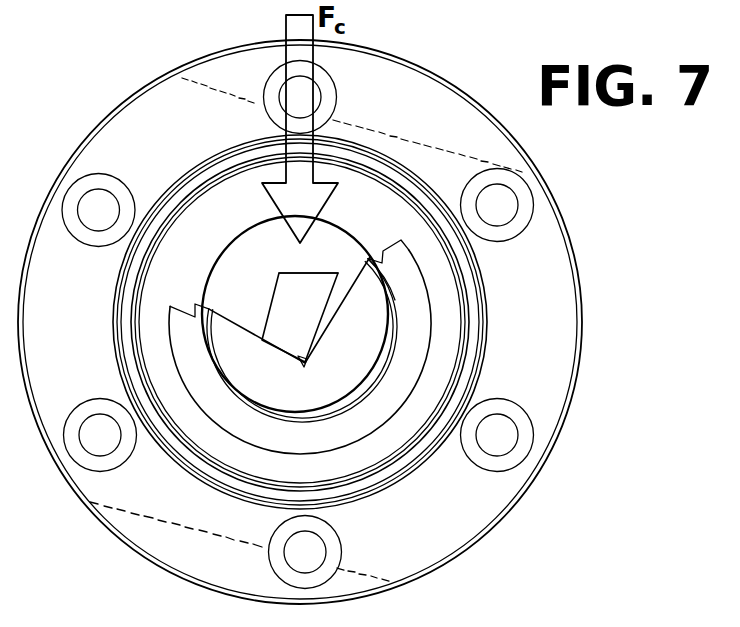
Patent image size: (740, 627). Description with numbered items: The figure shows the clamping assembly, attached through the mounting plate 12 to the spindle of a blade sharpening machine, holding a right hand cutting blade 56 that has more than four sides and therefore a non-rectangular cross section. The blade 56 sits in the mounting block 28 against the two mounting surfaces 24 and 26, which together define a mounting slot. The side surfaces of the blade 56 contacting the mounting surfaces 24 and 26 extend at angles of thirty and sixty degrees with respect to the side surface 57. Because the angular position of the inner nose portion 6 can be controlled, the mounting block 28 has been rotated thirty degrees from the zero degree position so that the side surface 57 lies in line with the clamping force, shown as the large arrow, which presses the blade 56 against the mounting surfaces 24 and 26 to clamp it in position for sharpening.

The mounting plate 12 is at (435, 95).
The inner nose portion 6 is at (217, 203).
The mounting surface 24 is at (349, 273).
The mounting surface 26 is at (228, 318).
The mounting block 28 is at (270, 395).
The right hand cutting blade 56 is at (319, 327).
The side surface 57 is at (318, 273).